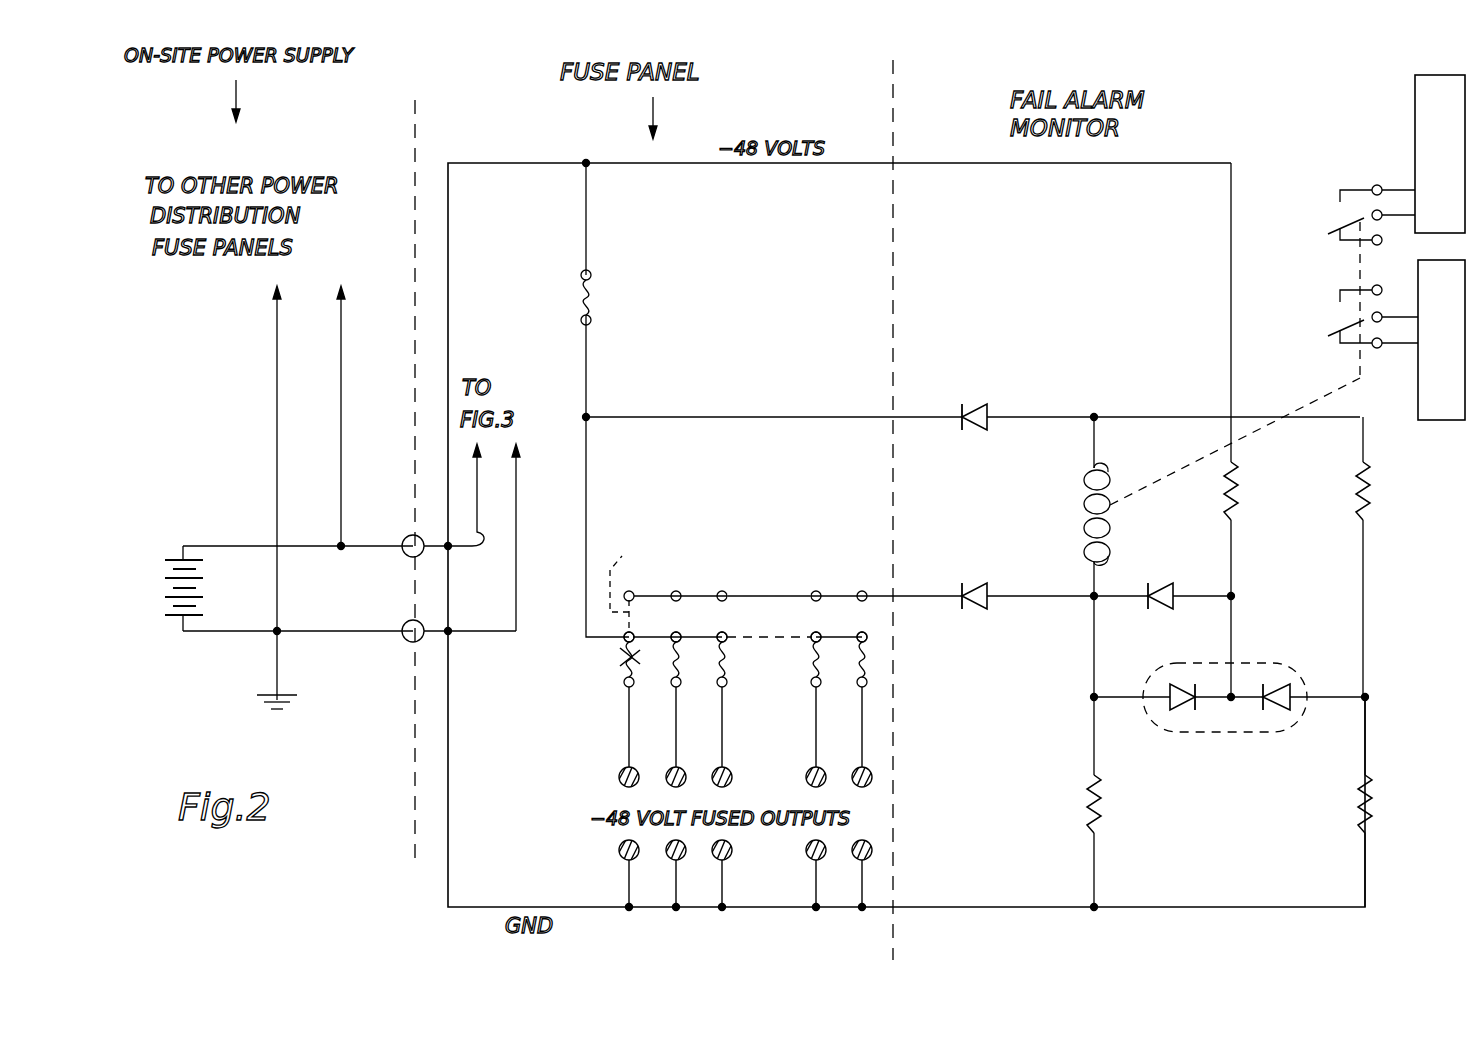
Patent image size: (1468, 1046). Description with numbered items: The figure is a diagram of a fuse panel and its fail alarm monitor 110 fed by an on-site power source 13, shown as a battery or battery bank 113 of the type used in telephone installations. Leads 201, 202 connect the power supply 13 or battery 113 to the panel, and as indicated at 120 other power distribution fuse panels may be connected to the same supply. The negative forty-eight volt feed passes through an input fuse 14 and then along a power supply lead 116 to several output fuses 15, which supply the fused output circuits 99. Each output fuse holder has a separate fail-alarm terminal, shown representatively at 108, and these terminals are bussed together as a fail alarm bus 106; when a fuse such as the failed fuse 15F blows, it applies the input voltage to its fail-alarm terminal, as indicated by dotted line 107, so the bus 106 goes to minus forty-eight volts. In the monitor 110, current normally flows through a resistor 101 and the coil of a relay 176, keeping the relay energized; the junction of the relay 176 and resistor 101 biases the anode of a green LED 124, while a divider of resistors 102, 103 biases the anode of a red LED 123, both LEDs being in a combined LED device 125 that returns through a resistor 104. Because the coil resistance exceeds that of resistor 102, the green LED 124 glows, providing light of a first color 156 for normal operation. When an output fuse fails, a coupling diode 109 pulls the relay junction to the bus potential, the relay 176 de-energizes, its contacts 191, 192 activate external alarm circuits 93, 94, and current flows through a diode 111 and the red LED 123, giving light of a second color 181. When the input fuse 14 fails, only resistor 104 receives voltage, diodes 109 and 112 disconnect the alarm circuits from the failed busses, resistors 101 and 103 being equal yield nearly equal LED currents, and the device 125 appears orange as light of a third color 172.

The power source 13 is at (256, 587).
The input fuse 14 is at (594, 298).
The output fuses 15 is at (810, 660).
The failed output fuse 15F is at (620, 668).
The alarm circuit 93 is at (1418, 372).
The alarm circuit 94 is at (1413, 118).
The fused output circuits 99 is at (780, 793).
The resistor 101 is at (1088, 812).
The resistor 102 is at (1370, 498).
The resistor 103 is at (1372, 812).
The resistor 104 is at (1238, 500).
The fail alarm bus 106 is at (816, 590).
The dotted line 107 is at (621, 582).
The fail-alarm terminal 108 is at (634, 590).
The coupling diode 109 is at (972, 582).
The monitor 110 is at (925, 488).
The diode 111 is at (1176, 556).
The diode 112 is at (978, 400).
The battery 113 is at (160, 590).
The power supply lead 116 is at (588, 476).
The connection to other power distribution fuse panels 120 is at (305, 412).
The red LED 123 is at (1290, 688).
The green LED 124 is at (1182, 685).
The combined LED device 125 is at (1245, 660).
The means for emitting light of a first color 156 is at (1160, 777).
The means for emitting light of a third color 172 is at (1235, 778).
The relay 176 is at (1083, 504).
The means for emitting light of a second color 181 is at (1302, 782).
The relay contacts 191 is at (1337, 322).
The relay contacts 192 is at (1337, 221).
The lead 201 is at (478, 556).
The lead 202 is at (520, 583).